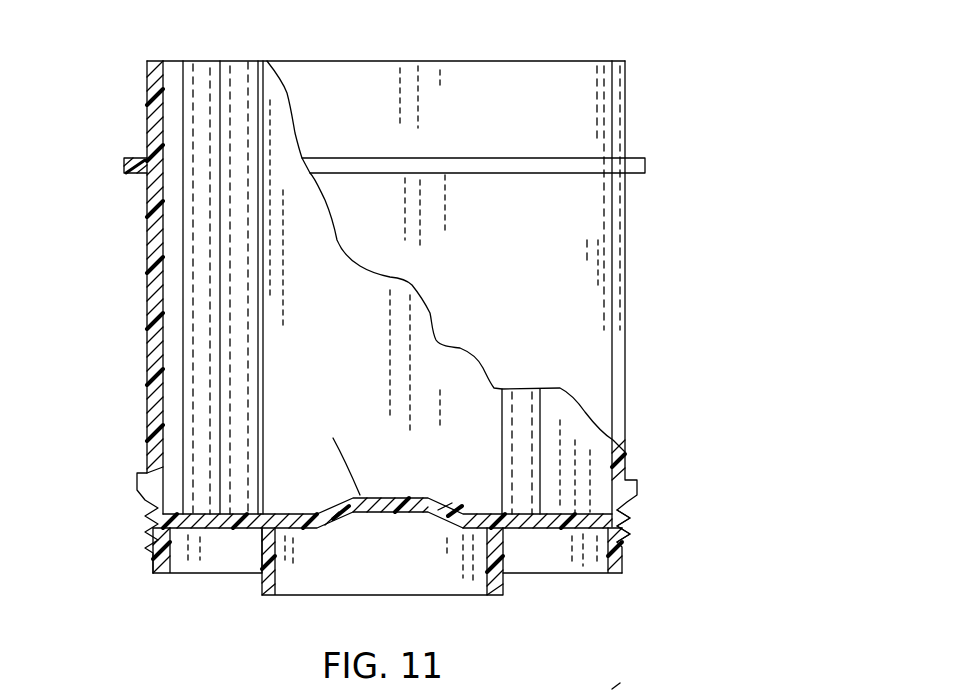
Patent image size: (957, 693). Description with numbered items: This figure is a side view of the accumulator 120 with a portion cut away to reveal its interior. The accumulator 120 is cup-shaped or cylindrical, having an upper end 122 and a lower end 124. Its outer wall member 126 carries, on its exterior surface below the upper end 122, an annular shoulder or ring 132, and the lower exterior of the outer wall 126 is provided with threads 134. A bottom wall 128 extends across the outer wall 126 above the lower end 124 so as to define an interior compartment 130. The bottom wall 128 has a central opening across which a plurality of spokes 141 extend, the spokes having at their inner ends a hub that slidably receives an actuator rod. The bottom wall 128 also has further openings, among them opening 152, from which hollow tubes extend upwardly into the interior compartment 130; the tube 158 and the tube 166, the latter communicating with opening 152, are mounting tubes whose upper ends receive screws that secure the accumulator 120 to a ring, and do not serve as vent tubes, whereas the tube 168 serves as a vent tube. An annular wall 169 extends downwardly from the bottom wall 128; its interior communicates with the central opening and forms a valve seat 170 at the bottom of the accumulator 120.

The accumulator 120 is at (662, 363).
The upper end 122 is at (622, 58).
The lower end 124 is at (263, 608).
The outer wall member 126 is at (625, 290).
The bottom wall 128 is at (443, 497).
The interior compartment 130 is at (351, 369).
The annular shoulder or ring 132 is at (645, 165).
The threads 134 is at (627, 533).
The spokes 141 is at (338, 523).
The opening 152 is at (238, 532).
The hollow tube 158 is at (537, 452).
The hollow tube 166 is at (230, 332).
The hollow tube 168 is at (198, 432).
The annular wall 169 is at (502, 563).
The valve seat 170 is at (470, 566).